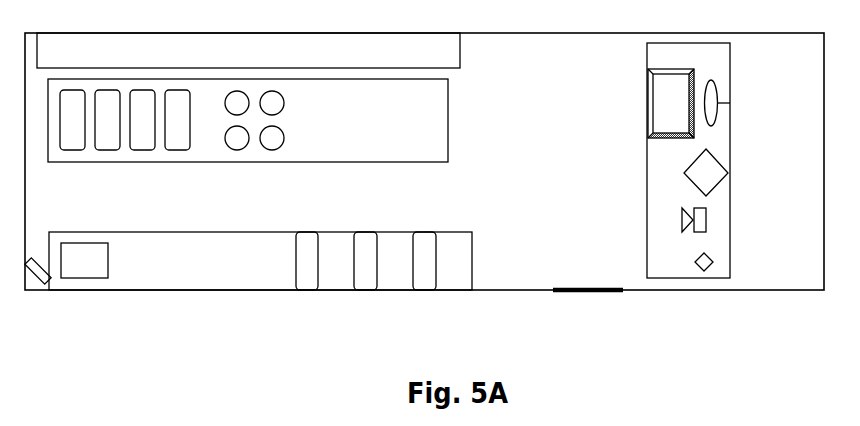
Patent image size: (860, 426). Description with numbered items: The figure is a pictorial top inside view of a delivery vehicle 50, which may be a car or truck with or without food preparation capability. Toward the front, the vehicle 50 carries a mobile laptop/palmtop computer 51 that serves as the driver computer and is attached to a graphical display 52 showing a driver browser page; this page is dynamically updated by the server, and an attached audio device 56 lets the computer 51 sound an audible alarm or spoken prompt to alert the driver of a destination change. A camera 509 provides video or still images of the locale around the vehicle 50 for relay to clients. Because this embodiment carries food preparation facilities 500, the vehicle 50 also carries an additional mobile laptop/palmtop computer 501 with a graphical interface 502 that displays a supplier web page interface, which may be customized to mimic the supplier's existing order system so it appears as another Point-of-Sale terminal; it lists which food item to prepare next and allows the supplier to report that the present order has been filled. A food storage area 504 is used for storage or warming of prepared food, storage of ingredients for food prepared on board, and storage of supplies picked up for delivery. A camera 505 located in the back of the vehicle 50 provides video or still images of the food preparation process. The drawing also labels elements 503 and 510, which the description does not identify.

The delivery vehicle 50 is at (82, 33).
The food storage area 504 is at (82, 61).
The food preparation facilities 500 is at (403, 110).
The mobile laptop/palmtop computer 501 is at (117, 226).
The graphical interface 502 is at (84, 255).
The connector panel 503 is at (260, 261).
The camera 505 is at (49, 282).
The sensor module 510 is at (688, 160).
The mobile laptop/palmtop computer 51 is at (649, 172).
The graphical display 52 is at (683, 173).
The audio device 56 is at (708, 233).
The camera 509 is at (708, 270).